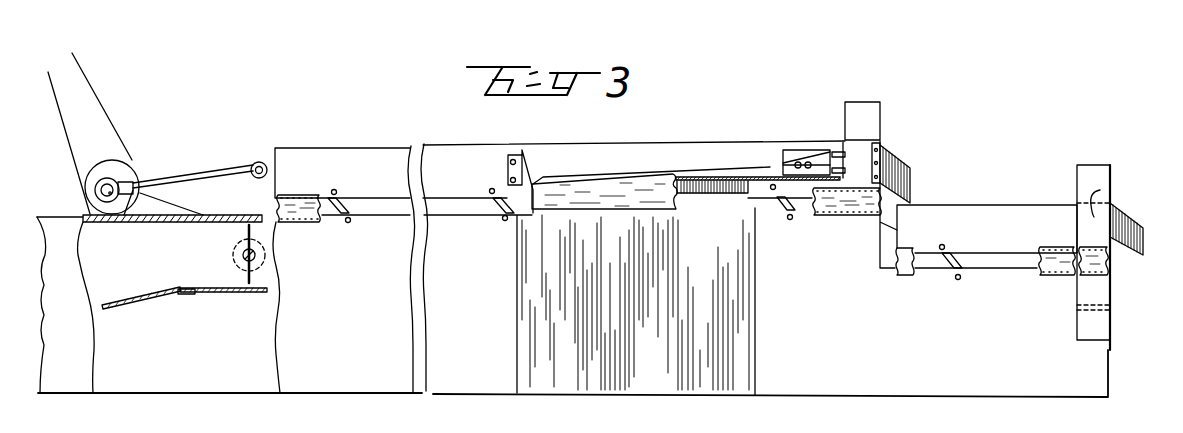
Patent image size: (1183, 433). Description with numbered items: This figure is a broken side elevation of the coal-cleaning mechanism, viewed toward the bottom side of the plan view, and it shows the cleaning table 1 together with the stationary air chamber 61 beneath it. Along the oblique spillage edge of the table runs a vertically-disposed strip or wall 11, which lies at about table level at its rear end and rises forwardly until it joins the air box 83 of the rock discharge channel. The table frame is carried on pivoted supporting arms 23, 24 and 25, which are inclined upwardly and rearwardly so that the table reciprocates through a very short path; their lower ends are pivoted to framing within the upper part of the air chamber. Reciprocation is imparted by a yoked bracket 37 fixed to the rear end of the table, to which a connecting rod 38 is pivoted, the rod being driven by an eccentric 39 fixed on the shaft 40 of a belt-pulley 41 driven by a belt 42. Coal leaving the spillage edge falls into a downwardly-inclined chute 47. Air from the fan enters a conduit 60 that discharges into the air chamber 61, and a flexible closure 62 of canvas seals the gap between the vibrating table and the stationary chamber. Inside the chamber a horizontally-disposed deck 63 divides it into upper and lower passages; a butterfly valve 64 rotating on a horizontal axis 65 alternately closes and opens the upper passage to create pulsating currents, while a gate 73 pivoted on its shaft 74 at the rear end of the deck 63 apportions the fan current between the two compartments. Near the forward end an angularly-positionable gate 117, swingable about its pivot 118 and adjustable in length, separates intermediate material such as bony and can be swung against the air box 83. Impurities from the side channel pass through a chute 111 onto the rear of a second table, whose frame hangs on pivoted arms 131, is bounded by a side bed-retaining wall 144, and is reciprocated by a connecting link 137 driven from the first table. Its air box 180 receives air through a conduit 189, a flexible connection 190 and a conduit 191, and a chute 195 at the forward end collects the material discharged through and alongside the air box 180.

The cleaning table 1 is at (484, 141).
The vertically-disposed strip or wall 11 is at (698, 172).
The pivoted supporting arm 23 is at (350, 207).
The pivoted supporting arm 24 is at (495, 207).
The pivoted supporting arm 25 is at (778, 203).
The yoked bracket 37 is at (262, 163).
The connecting rod 38 is at (198, 177).
The eccentric 39 is at (95, 188).
The shaft 40 is at (112, 192).
The belt-pulley 41 is at (122, 170).
The belt 42 is at (102, 112).
The downwardly-inclined chute 47 is at (570, 215).
The conduit 60 is at (107, 380).
The stationary air chamber 61 is at (382, 380).
The flexible closure 62 is at (274, 204).
The horizontally-disposed deck 63 is at (231, 295).
The butterfly valve 64 is at (246, 231).
The horizontal axis 65 is at (243, 256).
The gate 73 is at (132, 308).
The shaft 74 is at (181, 296).
The air box 83 is at (882, 104).
The chute 111 is at (893, 162).
The angularly-positionable gate 117 is at (780, 155).
The pivot 118 is at (837, 152).
The pivoted arm 131 is at (942, 264).
The connecting link 137 is at (878, 224).
The side bed-retaining wall 144 is at (987, 217).
The air box 180 is at (1077, 176).
The conduit 189 is at (1100, 292).
The flexible connection 190 is at (1113, 260).
The conduit 191 is at (1100, 190).
The chute 195 is at (1135, 228).